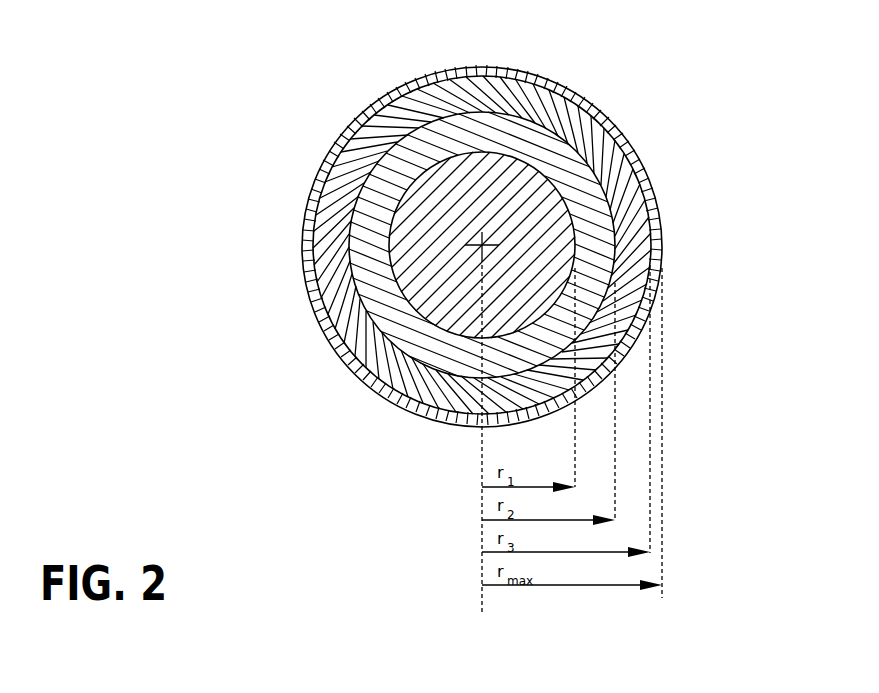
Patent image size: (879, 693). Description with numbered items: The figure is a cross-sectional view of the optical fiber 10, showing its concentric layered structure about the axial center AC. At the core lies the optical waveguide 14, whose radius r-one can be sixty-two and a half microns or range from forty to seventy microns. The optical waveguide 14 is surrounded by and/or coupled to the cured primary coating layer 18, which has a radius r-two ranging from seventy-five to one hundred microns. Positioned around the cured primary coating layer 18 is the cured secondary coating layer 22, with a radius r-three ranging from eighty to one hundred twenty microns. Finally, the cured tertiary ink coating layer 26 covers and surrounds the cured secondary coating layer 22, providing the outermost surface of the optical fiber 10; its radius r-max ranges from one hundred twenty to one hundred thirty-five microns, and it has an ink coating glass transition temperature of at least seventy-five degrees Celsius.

The optical fiber 10 is at (235, 130).
The optical waveguide 14 is at (413, 238).
The cured primary coating layer 18 is at (415, 153).
The cured secondary coating layer 22 is at (583, 104).
The cured tertiary ink coating layer 26 is at (653, 180).
The axial center AC is at (482, 245).